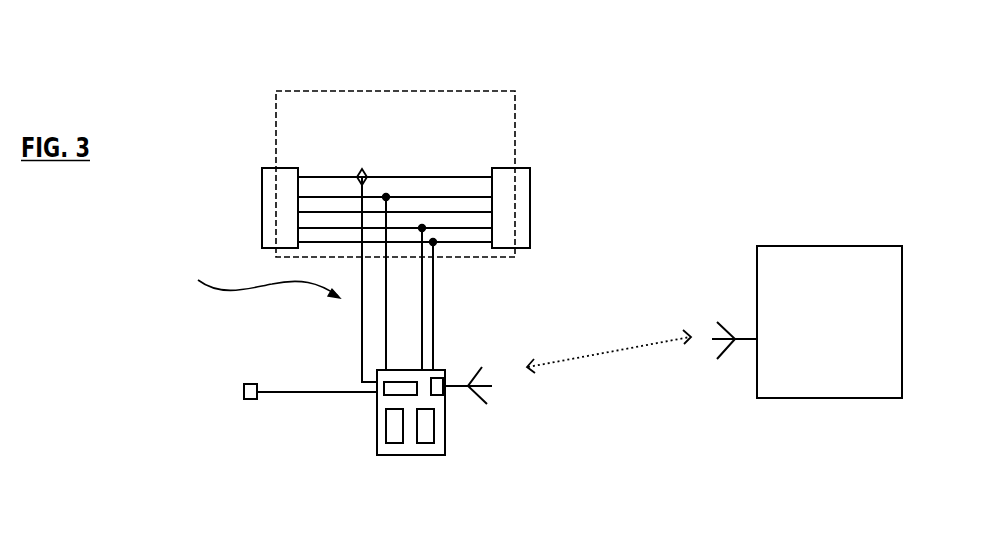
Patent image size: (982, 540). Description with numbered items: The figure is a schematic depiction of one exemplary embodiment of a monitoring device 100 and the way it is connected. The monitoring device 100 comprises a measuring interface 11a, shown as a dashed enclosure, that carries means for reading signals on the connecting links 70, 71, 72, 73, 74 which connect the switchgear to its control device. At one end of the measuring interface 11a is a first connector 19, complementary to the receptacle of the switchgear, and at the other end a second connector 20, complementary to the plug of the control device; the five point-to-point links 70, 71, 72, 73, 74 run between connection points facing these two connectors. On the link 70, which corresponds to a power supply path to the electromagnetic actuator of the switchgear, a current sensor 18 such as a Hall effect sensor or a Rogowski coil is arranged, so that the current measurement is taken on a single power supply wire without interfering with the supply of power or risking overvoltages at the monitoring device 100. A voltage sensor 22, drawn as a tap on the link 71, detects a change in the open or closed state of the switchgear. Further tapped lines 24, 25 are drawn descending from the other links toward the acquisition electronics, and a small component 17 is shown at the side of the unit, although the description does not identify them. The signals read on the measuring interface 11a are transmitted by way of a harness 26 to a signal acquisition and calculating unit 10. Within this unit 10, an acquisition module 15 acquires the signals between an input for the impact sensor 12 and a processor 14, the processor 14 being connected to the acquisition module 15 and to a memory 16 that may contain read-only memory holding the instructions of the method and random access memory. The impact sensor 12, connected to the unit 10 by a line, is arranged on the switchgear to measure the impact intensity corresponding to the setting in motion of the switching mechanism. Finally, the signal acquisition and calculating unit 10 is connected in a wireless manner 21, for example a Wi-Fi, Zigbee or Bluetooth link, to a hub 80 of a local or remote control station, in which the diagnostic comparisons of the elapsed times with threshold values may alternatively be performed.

The monitoring device 100 is at (206, 172).
The measuring interface 11a is at (400, 91).
The first connector 19 is at (262, 172).
The second connector 20 is at (527, 180).
The current sensor 18 is at (362, 169).
The connecting link 70 is at (383, 177).
The connecting link 71 is at (425, 197).
The connecting link 72 is at (463, 212).
The connecting link 73 is at (482, 210).
The connecting link 74 is at (479, 228).
The voltage sensor 22 is at (386, 312).
The second connection line 24 is at (422, 287).
The third connection line 25 is at (434, 322).
The harness 26 is at (253, 279).
The signal acquisition and calculating unit 10 is at (407, 453).
The acquisition module 15 is at (388, 390).
The communication interface 17 is at (442, 375).
The processor 14 is at (395, 443).
The memory 16 is at (432, 427).
The impact sensor 12 is at (248, 403).
The wireless link 21 is at (495, 409).
The hub 80 is at (812, 265).